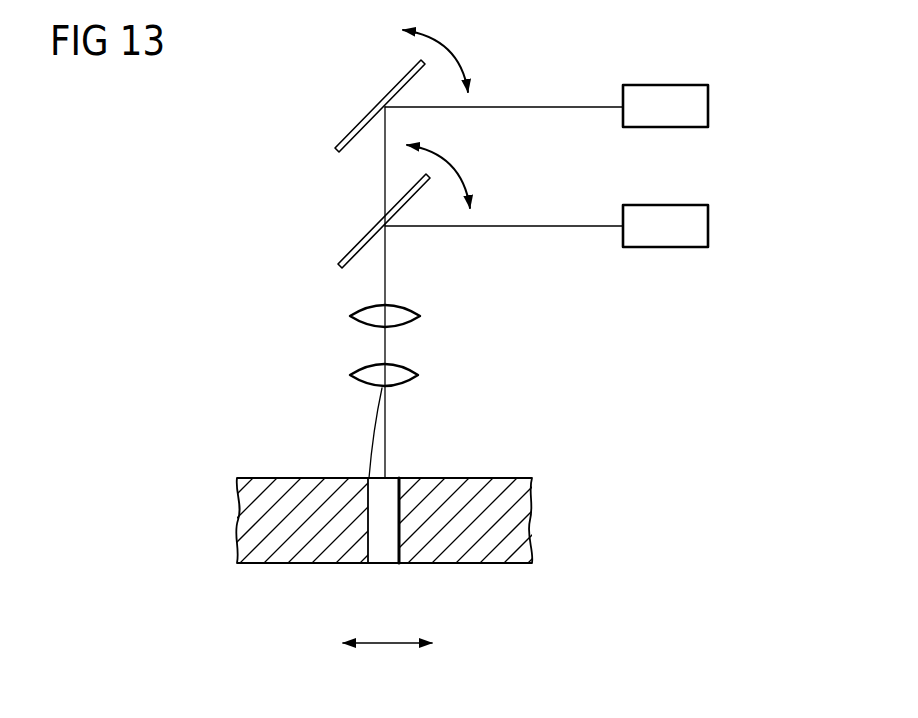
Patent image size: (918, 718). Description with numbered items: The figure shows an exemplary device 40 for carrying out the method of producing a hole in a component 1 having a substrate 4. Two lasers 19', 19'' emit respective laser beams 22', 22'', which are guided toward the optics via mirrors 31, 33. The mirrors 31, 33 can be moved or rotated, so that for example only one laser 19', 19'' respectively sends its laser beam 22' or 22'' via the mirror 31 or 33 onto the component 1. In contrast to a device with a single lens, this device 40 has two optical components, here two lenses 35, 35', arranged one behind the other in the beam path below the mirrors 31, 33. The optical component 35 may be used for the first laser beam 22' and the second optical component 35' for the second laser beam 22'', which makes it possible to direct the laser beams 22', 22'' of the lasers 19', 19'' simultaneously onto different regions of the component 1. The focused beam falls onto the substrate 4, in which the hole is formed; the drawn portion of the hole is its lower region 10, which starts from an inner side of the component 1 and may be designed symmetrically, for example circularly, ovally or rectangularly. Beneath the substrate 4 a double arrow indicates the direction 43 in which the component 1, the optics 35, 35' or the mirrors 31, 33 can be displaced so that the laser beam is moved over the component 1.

The component 1 is at (211, 553).
The substrate 4 is at (517, 505).
The lower region 10 is at (380, 548).
The laser 19' is at (705, 106).
The laser 19'' is at (708, 226).
The laser beam 22' is at (504, 75).
The laser beam 22'' is at (504, 193).
The mirror 31 is at (364, 123).
The mirror 33 is at (365, 239).
The optical component 35 is at (411, 288).
The second optical component 35' is at (415, 348).
The device 40 is at (212, 391).
The direction 43 is at (397, 642).